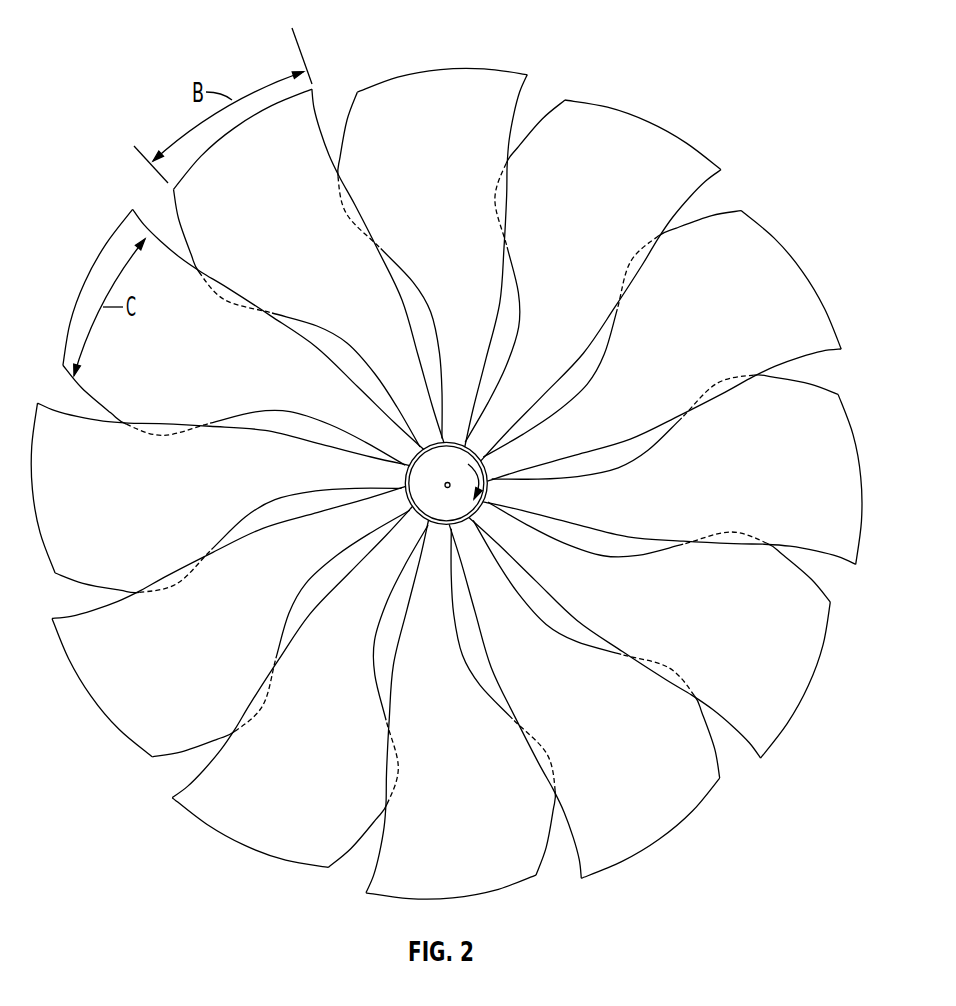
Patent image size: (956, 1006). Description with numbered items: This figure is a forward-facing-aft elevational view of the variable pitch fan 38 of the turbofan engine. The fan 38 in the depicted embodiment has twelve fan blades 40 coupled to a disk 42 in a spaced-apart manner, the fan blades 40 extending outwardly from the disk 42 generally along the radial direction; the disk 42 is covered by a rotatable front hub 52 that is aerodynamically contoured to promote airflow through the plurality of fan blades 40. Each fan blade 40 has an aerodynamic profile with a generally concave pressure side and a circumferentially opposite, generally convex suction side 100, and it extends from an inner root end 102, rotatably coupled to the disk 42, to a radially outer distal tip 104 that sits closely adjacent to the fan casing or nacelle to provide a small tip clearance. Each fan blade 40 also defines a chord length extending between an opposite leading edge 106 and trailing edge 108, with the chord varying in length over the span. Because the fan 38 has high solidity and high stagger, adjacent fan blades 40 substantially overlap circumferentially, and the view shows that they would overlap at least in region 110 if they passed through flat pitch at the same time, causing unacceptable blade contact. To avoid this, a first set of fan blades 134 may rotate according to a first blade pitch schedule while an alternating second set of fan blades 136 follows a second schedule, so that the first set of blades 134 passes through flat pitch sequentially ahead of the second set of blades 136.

The variable pitch fan 38 is at (648, 92).
The fan blades 40 is at (807, 420).
The disk 42 is at (482, 458).
The rotatable front hub 52 is at (450, 478).
The suction side 100 is at (588, 227).
The inner root end 102 is at (493, 492).
The distal tip 104 is at (861, 516).
The leading edge 106 is at (358, 203).
The trailing edge 108 is at (347, 343).
The region 110 is at (158, 582).
The first set of fan blades 134 is at (378, 603).
The second set of fan blades 136 is at (179, 675).